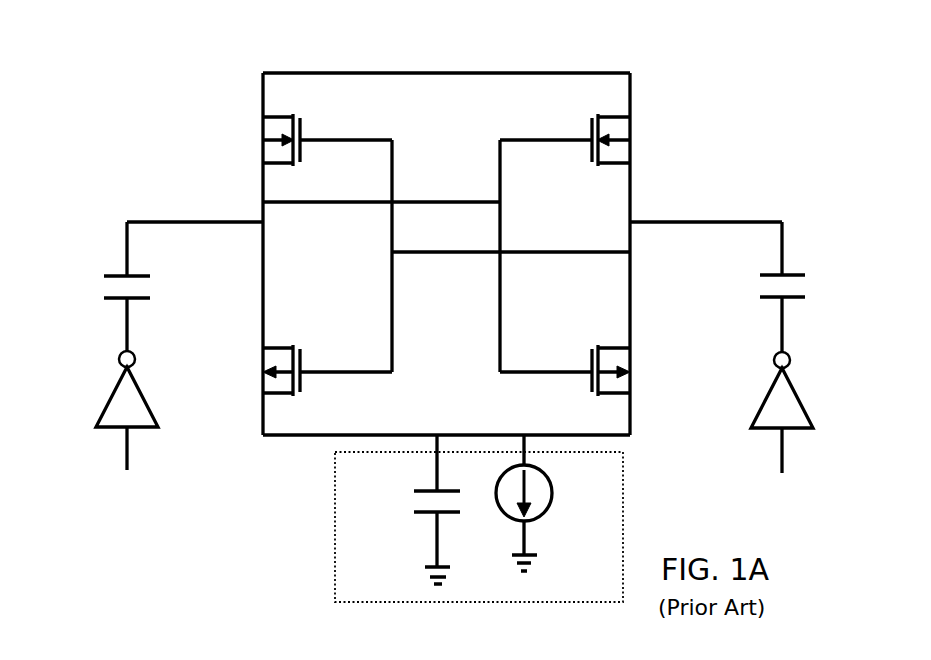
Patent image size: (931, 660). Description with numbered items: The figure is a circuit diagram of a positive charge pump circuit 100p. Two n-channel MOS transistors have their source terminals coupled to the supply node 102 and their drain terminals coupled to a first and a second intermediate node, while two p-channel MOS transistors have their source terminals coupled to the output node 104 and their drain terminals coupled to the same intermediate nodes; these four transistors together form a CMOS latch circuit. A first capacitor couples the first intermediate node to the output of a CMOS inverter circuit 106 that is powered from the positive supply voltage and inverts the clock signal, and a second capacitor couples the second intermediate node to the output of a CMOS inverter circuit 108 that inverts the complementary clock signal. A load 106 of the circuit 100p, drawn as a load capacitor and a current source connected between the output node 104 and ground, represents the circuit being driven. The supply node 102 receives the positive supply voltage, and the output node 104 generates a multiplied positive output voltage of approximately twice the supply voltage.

The positive charge pump circuit 100p is at (784, 142).
The supply node 102 is at (301, 73).
The output node 104 is at (294, 437).
The CMOS inverter circuit / load 106 is at (111, 404).
The CMOS inverter circuit 108 is at (805, 412).